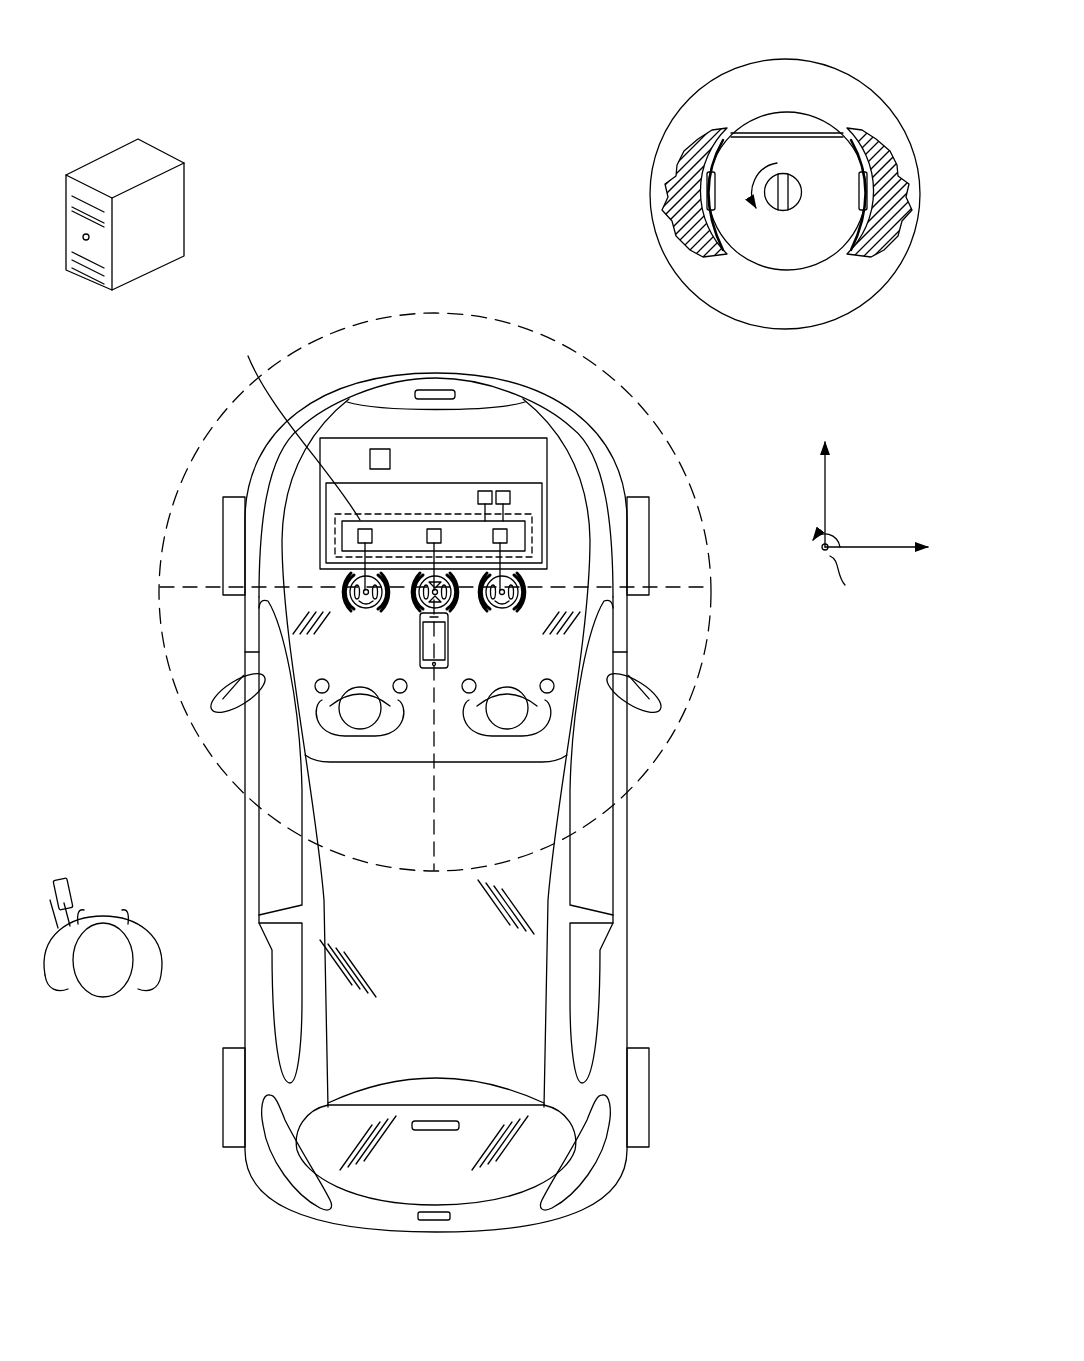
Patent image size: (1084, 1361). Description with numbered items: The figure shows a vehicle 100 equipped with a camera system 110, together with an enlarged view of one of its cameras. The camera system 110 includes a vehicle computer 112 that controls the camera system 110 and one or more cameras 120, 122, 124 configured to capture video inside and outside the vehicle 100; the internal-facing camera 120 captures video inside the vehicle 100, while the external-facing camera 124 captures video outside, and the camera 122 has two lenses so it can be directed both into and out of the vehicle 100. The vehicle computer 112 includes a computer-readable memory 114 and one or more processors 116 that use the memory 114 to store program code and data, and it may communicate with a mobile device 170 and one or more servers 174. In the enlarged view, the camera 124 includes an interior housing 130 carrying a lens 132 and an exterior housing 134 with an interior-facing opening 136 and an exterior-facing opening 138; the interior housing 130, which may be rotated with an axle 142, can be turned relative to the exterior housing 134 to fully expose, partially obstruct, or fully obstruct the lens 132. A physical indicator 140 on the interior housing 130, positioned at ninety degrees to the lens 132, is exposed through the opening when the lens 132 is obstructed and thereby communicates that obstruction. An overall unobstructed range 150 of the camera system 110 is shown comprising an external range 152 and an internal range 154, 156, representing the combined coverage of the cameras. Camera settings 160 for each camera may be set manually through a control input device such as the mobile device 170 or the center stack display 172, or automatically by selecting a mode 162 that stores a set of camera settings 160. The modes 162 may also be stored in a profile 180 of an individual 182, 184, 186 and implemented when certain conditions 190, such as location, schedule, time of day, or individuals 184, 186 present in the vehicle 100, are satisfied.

The vehicle 100 is at (785, 957).
The camera system 110 is at (312, 502).
The vehicle computer 112 is at (550, 478).
The computer-readable memory 114 is at (485, 491).
The processor 116 is at (378, 449).
The internal-facing camera 120 is at (333, 590).
The camera 122 is at (410, 617).
The external-facing camera 124 is at (533, 581).
The interior housing 130 is at (807, 247).
The lens 132 is at (775, 116).
The exterior housing 134 is at (667, 185).
The interior-facing opening 136 is at (802, 287).
The exterior-facing opening 138 is at (827, 105).
The physical indicator 140 is at (720, 160).
The axle 142 is at (783, 173).
The overall unobstructed range 150 is at (360, 293).
The external range 152 is at (428, 310).
The internal range 154 is at (202, 742).
The internal range 156 is at (707, 662).
The camera settings 160 is at (703, 470).
The mode 162 is at (530, 527).
The mobile device 170 is at (63, 878).
The center stack display 172 is at (450, 656).
The server 174 is at (184, 203).
The profile 180 is at (295, 423).
The individual 182 is at (103, 998).
The individual 184 is at (358, 737).
The individual 186 is at (503, 737).
The conditions 190 is at (503, 491).